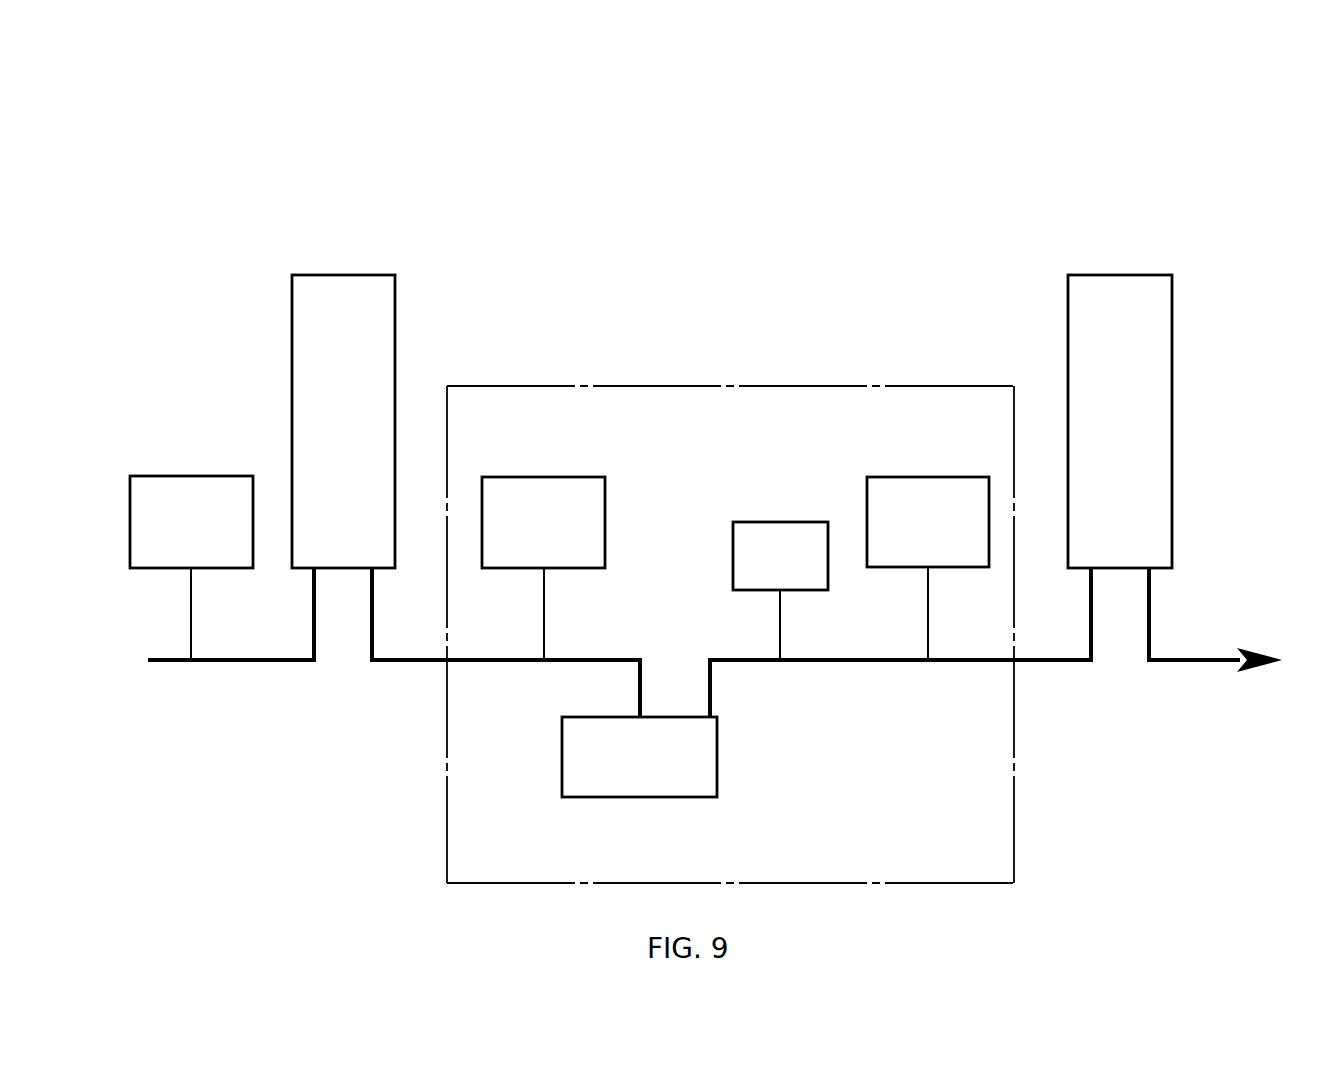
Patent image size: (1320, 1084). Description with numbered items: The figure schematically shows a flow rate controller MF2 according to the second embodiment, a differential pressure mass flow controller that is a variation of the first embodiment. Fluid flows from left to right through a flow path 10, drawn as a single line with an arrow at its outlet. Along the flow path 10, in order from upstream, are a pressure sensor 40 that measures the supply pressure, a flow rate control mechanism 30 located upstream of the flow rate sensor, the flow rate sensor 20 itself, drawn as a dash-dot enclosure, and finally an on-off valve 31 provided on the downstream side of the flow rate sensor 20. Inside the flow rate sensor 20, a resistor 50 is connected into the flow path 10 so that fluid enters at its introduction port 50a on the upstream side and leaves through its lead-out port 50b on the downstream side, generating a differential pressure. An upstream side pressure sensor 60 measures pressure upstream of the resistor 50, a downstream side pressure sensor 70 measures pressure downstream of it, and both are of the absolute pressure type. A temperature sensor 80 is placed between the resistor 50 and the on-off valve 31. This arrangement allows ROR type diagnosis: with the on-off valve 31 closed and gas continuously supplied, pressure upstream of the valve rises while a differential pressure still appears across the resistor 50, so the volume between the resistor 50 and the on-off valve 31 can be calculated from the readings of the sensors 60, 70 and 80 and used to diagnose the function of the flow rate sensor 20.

The flow rate controller MF2 is at (1138, 128).
The flow path 10 is at (168, 663).
The flow rate sensor 20 is at (479, 385).
The flow rate control mechanism 30 is at (323, 273).
The on-off valve 31 is at (1100, 273).
The pressure sensor 40 is at (160, 475).
The resistor 50 is at (640, 798).
The introduction port 50a is at (637, 714).
The lead-out port 50b is at (712, 712).
The upstream side pressure sensor 60 is at (516, 475).
The downstream side pressure sensor 70 is at (907, 475).
The temperature sensor 80 is at (757, 520).